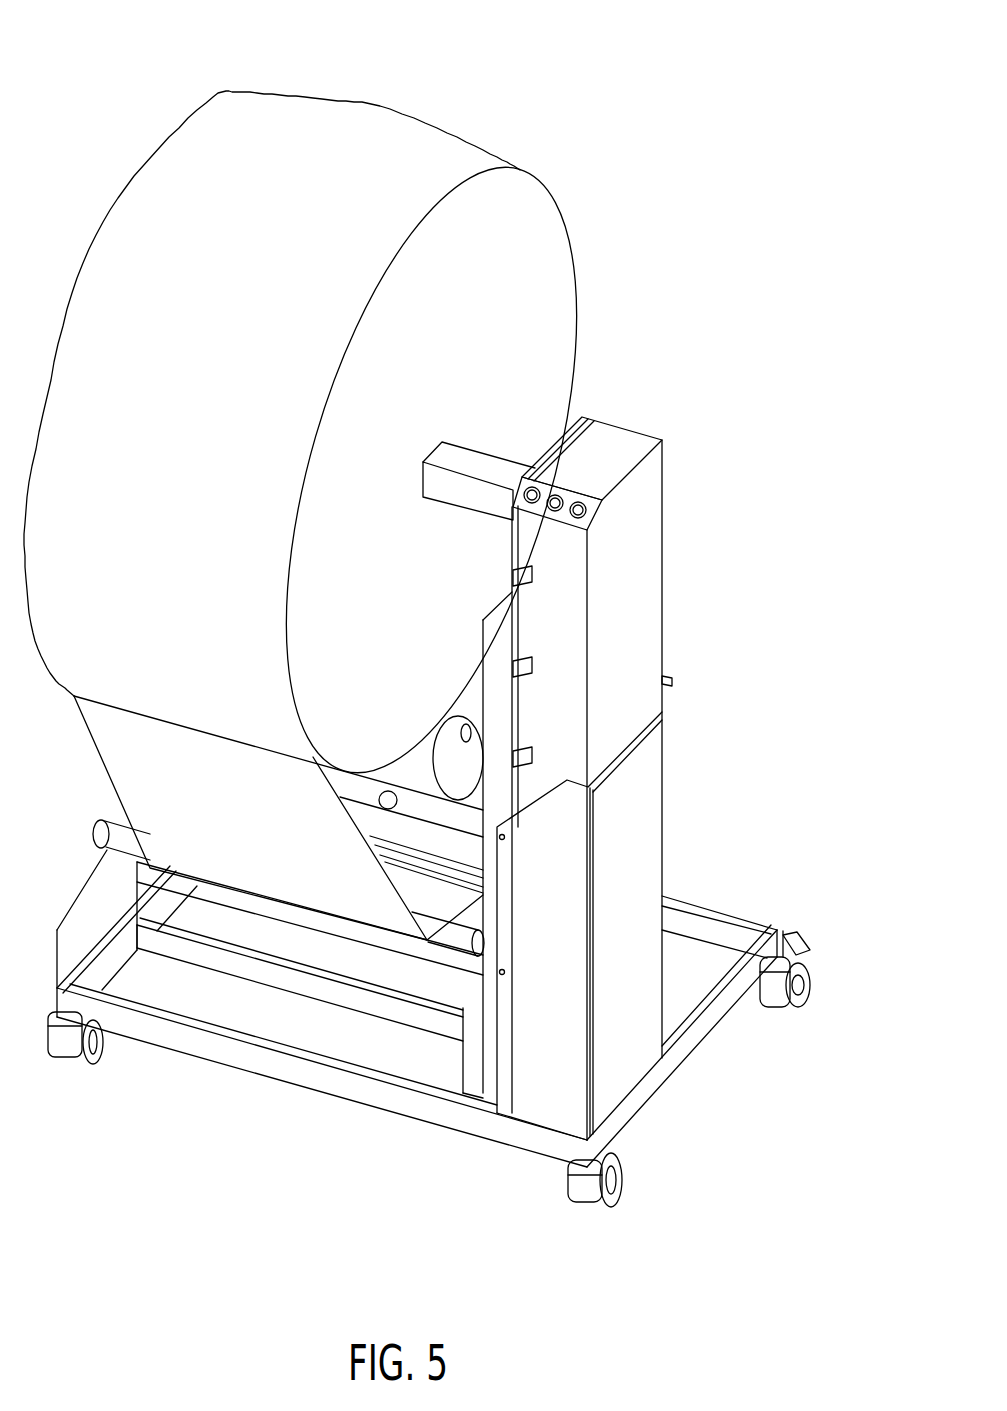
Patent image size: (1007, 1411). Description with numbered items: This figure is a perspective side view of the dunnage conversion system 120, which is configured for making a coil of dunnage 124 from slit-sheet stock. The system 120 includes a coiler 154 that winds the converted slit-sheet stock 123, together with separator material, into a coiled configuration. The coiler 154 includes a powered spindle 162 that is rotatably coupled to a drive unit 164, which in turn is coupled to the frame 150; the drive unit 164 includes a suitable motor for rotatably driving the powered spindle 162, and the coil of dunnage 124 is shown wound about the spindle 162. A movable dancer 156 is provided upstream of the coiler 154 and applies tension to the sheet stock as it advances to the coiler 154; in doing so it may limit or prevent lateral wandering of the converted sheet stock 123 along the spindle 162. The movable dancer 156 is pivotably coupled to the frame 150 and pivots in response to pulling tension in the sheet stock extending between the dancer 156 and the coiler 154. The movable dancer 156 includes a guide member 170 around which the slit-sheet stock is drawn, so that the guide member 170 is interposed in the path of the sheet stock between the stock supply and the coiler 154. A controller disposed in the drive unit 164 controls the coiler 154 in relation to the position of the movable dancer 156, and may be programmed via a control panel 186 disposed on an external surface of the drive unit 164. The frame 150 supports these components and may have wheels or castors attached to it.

The dunnage conversion system 120 is at (810, 86).
The converted slit-sheet stock 123 is at (123, 773).
The coil of dunnage 124 is at (424, 153).
The frame 150 is at (733, 918).
The coiler 154 is at (712, 474).
The movable dancer 156 is at (421, 967).
The powered spindle 162 is at (477, 464).
The drive unit 164 is at (641, 551).
The guide member 170 is at (458, 944).
The control panel 186 is at (557, 490).